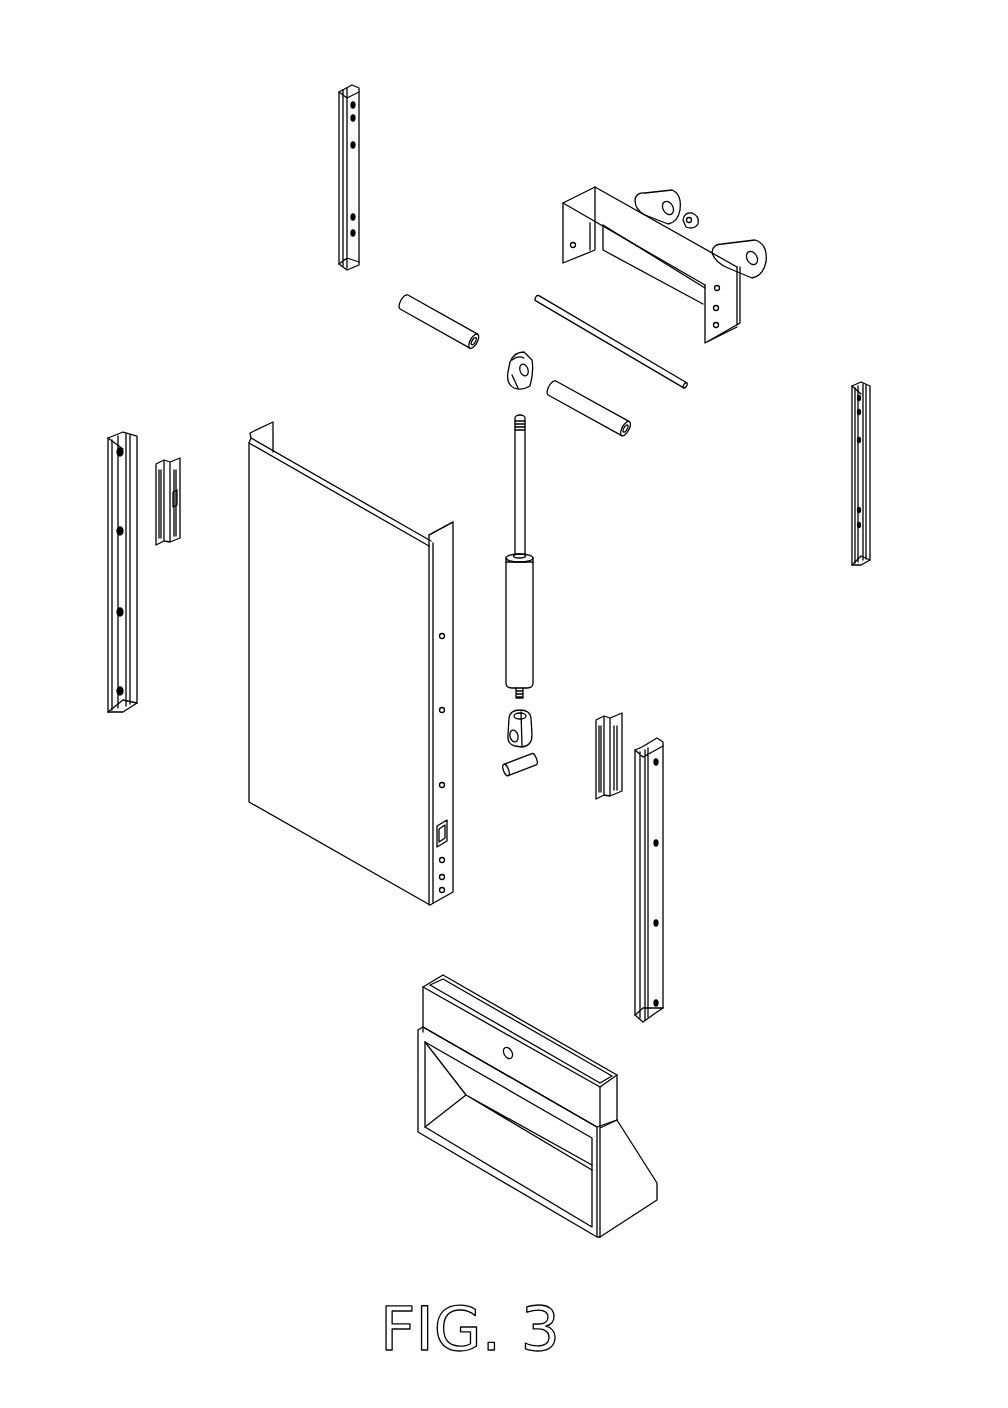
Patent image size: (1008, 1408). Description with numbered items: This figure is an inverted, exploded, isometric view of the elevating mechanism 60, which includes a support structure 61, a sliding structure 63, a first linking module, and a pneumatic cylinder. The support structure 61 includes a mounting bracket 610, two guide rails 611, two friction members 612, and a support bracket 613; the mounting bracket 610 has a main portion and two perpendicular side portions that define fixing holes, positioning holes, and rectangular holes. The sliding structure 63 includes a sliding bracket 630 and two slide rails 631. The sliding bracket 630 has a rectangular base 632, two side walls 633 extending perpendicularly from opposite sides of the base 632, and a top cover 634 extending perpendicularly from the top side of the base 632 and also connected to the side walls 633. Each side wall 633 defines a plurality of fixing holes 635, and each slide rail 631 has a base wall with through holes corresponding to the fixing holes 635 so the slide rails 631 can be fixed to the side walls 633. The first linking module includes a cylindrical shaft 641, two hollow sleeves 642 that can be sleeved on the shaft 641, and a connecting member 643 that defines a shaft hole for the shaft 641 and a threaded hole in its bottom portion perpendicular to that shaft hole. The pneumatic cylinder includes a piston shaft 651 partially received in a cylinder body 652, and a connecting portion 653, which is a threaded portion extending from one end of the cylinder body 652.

The elevating mechanism 60 is at (146, 146).
The support structure 61 is at (176, 906).
The mounting bracket 610 is at (340, 822).
The guide rail 611 is at (597, 767).
The friction member 612 is at (655, 886).
The support bracket 613 is at (445, 1100).
The sliding structure 63 is at (657, 84).
The sliding bracket 630 is at (584, 162).
The slide rail 631 is at (388, 92).
The rectangular base 632 is at (606, 265).
The side wall 633 is at (728, 325).
The top cover 634 is at (690, 252).
The fixing hole 635 is at (717, 285).
The shaft 641 is at (677, 382).
The sleeve 642 is at (603, 422).
The connecting member 643 is at (508, 383).
The piston shaft 651 is at (522, 510).
The cylinder body 652 is at (522, 602).
The connecting portion 653 is at (523, 693).